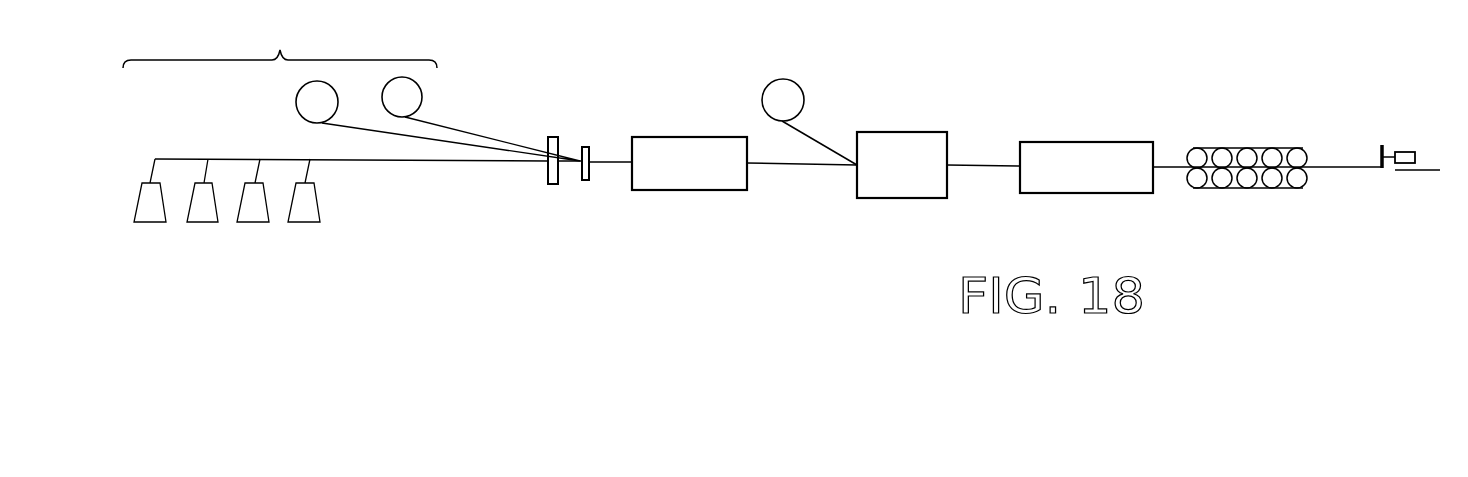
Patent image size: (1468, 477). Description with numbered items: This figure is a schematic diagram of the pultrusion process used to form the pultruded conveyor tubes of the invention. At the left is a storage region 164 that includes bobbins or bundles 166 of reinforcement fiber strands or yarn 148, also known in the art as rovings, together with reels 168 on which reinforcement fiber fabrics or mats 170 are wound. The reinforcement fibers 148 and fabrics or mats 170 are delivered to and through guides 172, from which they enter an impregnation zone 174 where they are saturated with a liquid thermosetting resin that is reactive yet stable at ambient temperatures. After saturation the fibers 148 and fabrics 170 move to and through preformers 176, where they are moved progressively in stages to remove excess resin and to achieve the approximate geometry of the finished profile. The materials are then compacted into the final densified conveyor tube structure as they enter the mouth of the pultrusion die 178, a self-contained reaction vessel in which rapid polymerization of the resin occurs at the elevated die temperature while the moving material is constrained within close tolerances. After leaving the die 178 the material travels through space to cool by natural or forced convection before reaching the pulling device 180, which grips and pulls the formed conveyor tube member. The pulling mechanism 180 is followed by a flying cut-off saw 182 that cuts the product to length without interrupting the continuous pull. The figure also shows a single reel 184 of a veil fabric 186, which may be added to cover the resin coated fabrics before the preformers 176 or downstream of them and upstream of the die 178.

The reinforcement fiber strands or yarn 148 is at (422, 163).
The storage region 164 is at (280, 40).
The bobbins or bundles 166 is at (295, 222).
The reels 168 is at (296, 100).
The reinforcement fiber fabrics or mats 170 is at (483, 146).
The guides 172 is at (582, 187).
The impregnation zone 174 is at (692, 177).
The preformers 176 is at (917, 140).
The pultrusion die 178 is at (1080, 147).
The pulling device 180 is at (1250, 147).
The flying cut-off saw 182 is at (1403, 150).
The reel 184 is at (769, 86).
The veil fabric 186 is at (812, 137).